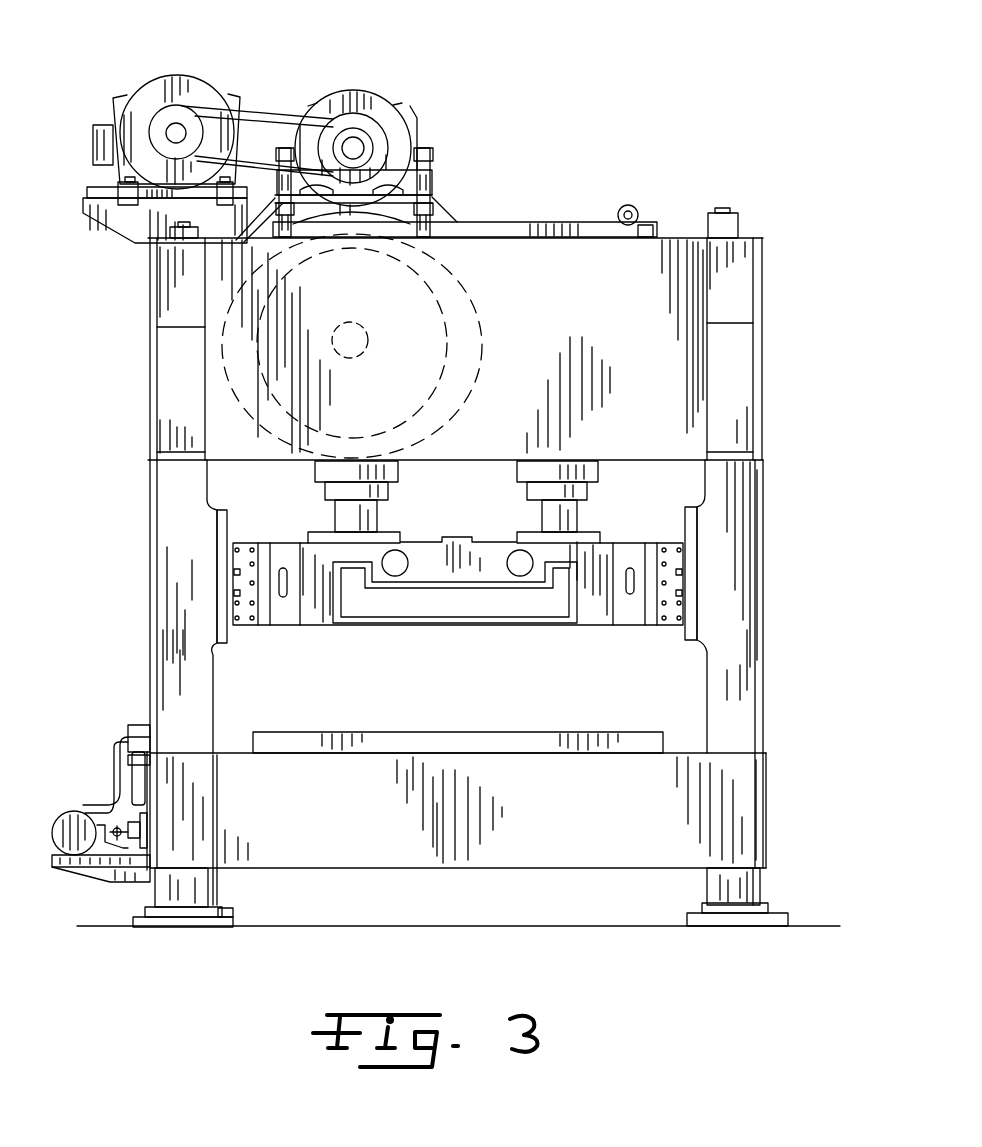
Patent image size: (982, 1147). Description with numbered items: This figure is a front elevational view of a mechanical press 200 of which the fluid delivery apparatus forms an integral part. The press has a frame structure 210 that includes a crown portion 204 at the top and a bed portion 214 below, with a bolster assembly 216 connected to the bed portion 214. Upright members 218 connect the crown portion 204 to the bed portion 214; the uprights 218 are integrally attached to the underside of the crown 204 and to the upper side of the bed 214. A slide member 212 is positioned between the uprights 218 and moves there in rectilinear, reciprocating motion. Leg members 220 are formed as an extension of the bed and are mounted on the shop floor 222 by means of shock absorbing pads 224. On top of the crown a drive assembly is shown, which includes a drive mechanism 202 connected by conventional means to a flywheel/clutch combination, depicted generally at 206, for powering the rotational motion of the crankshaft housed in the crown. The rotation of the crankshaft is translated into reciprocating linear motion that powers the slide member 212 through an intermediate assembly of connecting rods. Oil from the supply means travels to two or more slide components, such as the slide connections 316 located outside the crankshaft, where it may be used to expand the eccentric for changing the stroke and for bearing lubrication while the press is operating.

The mechanical press 200 is at (592, 153).
The drive mechanism 202 is at (273, 66).
The crown portion 204 is at (675, 355).
The flywheel/clutch combination 206 is at (510, 310).
The frame structure 210 is at (780, 650).
The slide member 212 is at (290, 547).
The bed portion 214 is at (215, 810).
The bolster assembly 216 is at (513, 740).
The upright members 218 is at (737, 520).
The leg members 220 is at (173, 888).
The shop floor 222 is at (455, 925).
The shock absorbing pads 224 is at (226, 915).
The slide connections 316 is at (312, 506).